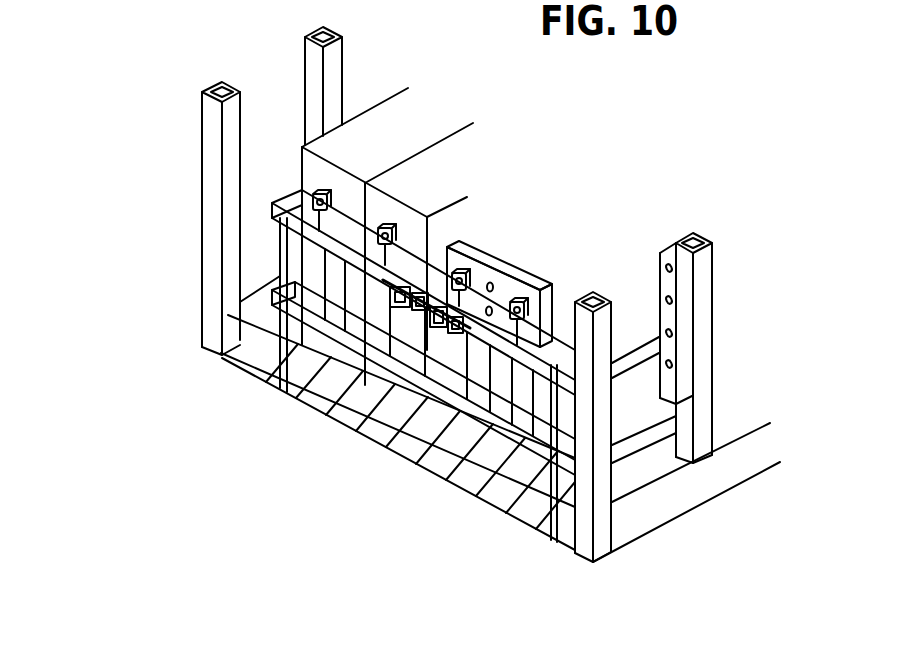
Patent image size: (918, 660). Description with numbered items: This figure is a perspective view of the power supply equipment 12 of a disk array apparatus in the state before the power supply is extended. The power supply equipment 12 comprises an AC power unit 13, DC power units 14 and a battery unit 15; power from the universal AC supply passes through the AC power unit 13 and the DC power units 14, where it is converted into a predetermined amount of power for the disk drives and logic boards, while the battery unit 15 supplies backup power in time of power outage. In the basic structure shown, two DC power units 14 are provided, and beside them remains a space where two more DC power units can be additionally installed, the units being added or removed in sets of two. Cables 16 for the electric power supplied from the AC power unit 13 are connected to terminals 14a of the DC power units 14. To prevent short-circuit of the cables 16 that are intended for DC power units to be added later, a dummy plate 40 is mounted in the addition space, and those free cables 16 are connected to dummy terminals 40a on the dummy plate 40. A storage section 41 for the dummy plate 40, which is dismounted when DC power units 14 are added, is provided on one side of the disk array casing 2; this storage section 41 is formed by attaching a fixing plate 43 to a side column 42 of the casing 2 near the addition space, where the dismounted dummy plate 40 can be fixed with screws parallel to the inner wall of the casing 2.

The disk array casing 2 is at (202, 160).
The power supply equipment 12 is at (395, 380).
The AC power unit 13 is at (360, 378).
The DC power unit 14 is at (310, 177).
The terminal 14a is at (322, 194).
The battery unit 15 is at (282, 325).
The cable 16 is at (300, 233).
The dummy plate 40 is at (493, 263).
The dummy terminal 40a is at (460, 272).
The storage section 41 is at (652, 412).
The side column 42 is at (705, 316).
The fixing plate 43 is at (665, 280).